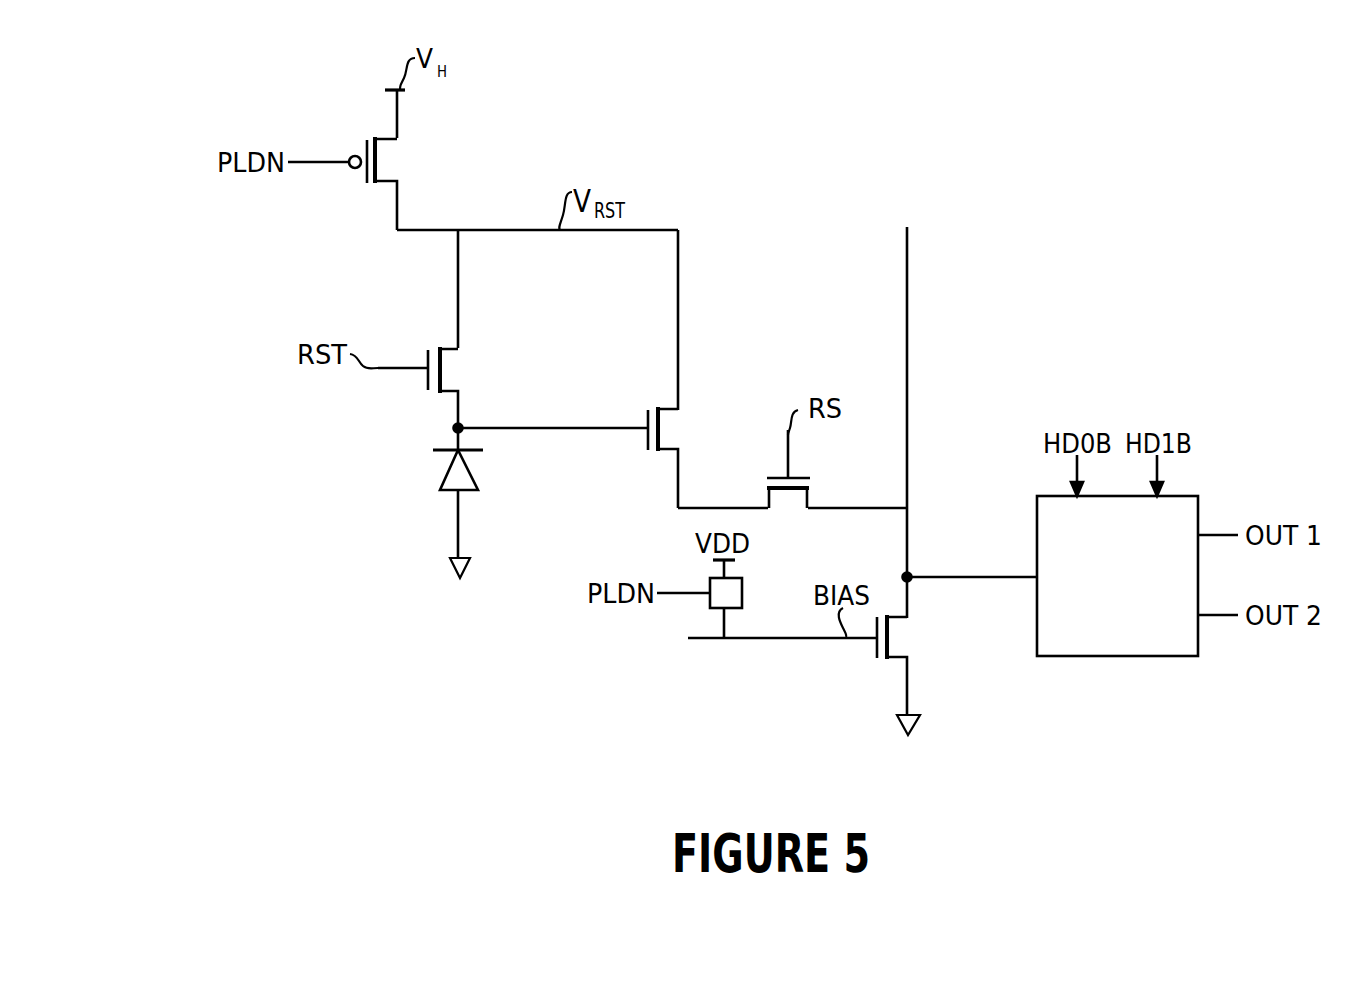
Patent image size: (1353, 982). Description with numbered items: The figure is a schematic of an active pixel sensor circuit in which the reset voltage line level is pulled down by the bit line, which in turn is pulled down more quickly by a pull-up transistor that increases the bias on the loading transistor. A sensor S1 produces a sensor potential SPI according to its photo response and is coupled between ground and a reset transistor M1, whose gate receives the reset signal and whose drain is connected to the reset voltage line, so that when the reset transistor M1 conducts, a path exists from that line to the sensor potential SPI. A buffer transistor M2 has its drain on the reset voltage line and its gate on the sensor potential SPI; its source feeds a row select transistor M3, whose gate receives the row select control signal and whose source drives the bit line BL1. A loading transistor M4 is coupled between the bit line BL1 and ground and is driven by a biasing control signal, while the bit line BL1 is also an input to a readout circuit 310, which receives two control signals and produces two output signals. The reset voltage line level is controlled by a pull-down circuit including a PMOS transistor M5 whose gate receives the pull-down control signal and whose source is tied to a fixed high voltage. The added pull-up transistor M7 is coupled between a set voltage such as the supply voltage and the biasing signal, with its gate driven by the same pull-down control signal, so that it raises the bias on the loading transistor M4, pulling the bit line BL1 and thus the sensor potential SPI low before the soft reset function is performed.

The reset transistor M1 is at (452, 370).
The buffer transistor M2 is at (672, 430).
The row select transistor M3 is at (788, 498).
The loading transistor M4 is at (900, 637).
The PMOS transistor M5 is at (388, 162).
The pull-up transistor M7 is at (745, 600).
The sensor S1 is at (473, 460).
The sensor potential SPI is at (446, 441).
The bit line BL1 is at (908, 328).
The readout circuit 310 is at (1140, 656).